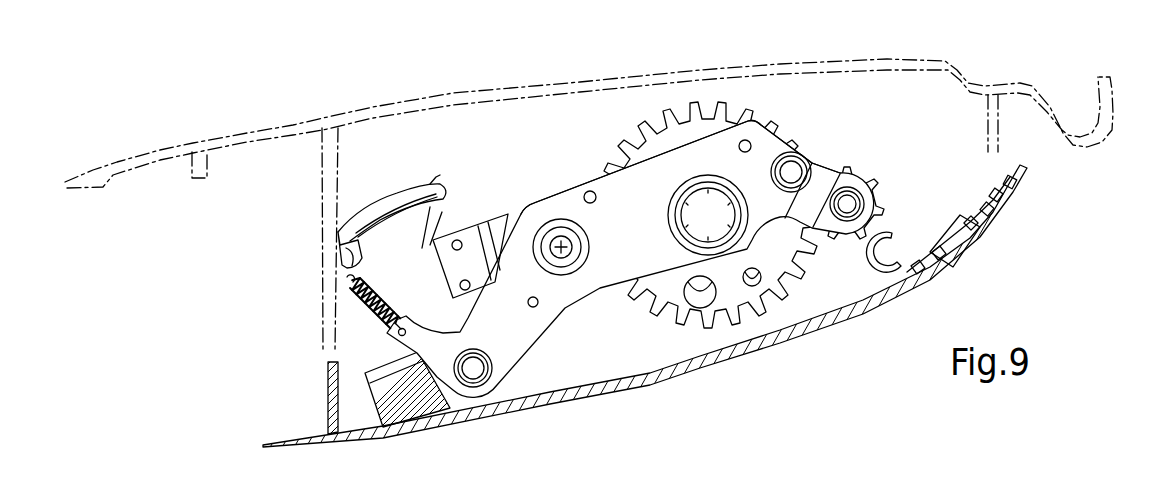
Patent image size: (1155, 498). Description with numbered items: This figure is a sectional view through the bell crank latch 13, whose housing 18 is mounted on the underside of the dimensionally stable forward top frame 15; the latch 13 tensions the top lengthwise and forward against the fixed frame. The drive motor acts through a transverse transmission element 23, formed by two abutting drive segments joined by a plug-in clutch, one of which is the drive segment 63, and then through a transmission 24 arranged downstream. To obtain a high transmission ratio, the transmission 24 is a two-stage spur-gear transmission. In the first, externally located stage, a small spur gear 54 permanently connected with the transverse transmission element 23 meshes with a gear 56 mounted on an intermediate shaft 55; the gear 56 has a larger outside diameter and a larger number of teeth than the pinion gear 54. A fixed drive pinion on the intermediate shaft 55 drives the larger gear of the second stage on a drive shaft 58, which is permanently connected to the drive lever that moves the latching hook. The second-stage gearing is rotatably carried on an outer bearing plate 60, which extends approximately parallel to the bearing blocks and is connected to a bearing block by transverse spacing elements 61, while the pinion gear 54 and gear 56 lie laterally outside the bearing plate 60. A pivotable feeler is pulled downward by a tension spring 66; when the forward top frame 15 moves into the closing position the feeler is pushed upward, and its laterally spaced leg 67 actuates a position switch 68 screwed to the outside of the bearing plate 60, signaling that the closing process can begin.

The latch 13 is at (302, 238).
The forward top frame 15 is at (803, 58).
The housing 18 is at (853, 334).
The transverse transmission element 23 is at (878, 202).
The transmission 24 is at (810, 121).
The spur gear 54 is at (874, 162).
The intermediate shaft 55 is at (707, 215).
The gear 56 is at (743, 95).
The drive shaft 58 is at (561, 245).
The bearing plate 60 is at (527, 332).
The transverse spacing elements 61 is at (792, 172).
The drive segment 63 is at (846, 211).
The tension spring 66 is at (375, 300).
The leg 67 is at (390, 203).
The position switch 68 is at (478, 208).